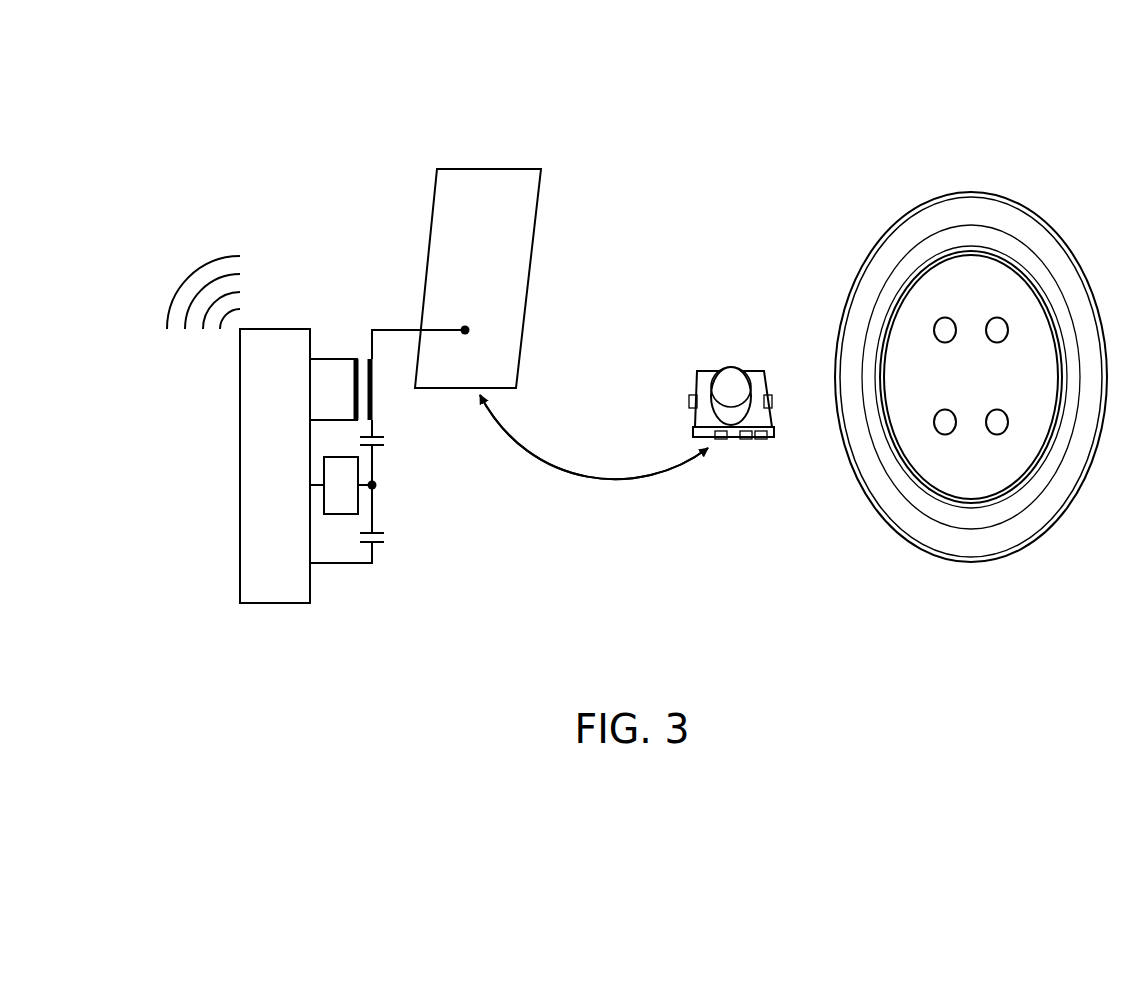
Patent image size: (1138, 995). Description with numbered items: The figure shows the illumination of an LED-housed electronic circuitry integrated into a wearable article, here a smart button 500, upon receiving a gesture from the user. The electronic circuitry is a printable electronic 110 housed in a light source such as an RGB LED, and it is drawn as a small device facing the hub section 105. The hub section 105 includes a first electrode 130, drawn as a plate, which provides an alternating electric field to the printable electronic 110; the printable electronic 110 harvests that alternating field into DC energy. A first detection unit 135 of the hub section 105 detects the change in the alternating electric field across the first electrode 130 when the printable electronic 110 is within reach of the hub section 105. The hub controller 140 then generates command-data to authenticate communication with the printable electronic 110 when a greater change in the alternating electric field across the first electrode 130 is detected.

The hub section 105 is at (193, 100).
The printable electronic 110 is at (707, 353).
The first electrode 130 is at (427, 252).
The first detection unit 135 is at (358, 478).
The hub controller 140 is at (240, 460).
The smart button 500 is at (912, 343).